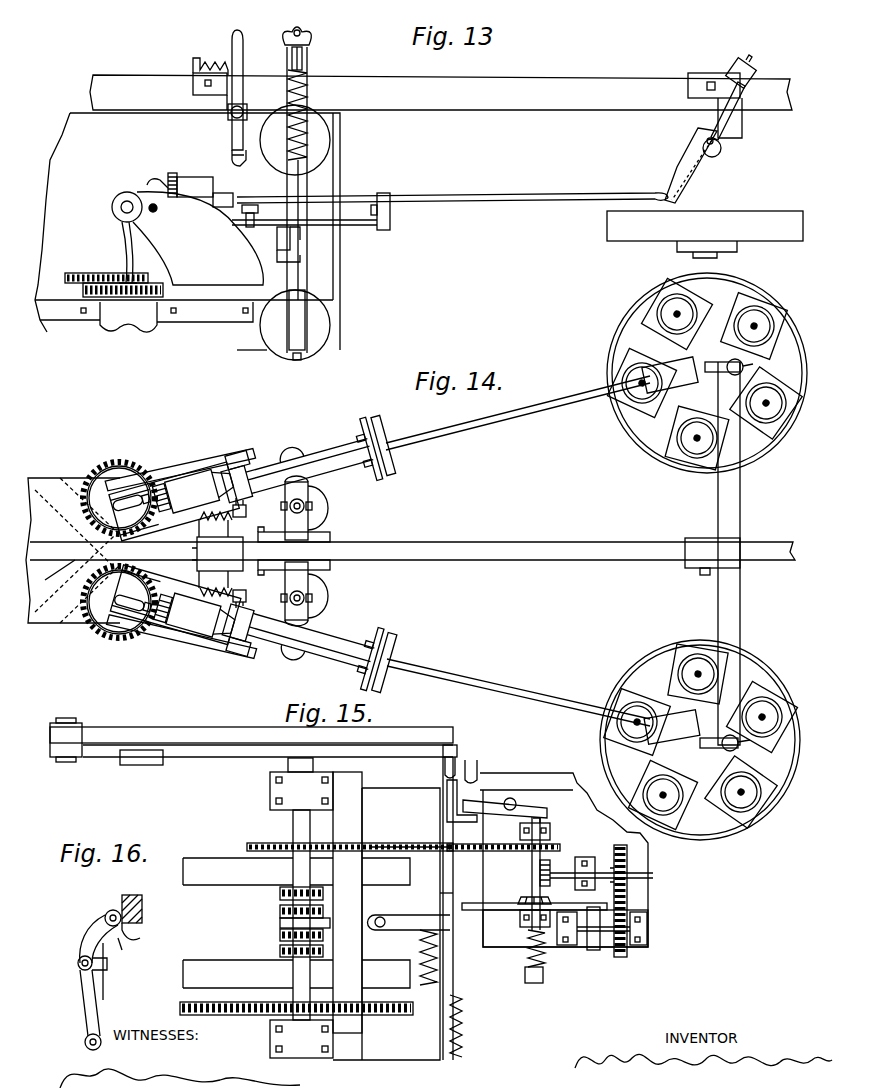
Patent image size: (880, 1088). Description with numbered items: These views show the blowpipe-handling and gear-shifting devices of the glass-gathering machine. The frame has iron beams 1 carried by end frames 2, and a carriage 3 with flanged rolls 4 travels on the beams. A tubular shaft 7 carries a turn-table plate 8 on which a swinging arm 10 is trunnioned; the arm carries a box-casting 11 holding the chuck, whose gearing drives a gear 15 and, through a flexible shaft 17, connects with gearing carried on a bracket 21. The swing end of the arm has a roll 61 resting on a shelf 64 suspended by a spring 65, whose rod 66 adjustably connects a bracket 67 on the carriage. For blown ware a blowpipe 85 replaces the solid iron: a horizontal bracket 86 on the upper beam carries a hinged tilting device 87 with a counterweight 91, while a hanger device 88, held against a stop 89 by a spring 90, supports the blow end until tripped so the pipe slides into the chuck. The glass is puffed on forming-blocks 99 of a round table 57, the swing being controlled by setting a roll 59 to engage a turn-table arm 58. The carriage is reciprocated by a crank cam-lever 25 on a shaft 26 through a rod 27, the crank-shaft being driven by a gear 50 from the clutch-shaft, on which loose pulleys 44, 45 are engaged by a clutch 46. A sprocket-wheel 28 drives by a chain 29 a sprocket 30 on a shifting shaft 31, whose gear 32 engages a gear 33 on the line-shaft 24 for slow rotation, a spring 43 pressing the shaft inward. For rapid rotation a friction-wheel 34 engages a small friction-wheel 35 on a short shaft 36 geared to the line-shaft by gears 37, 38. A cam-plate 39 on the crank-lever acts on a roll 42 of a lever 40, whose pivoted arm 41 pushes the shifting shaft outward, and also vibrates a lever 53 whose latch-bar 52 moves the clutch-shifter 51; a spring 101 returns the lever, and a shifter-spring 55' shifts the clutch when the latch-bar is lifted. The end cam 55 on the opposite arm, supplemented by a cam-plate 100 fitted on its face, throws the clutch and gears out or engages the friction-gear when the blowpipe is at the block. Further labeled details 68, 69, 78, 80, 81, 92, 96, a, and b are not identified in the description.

In FIG. 13, the iron beams 1 is at (441, 92).
In FIG. 14, the iron beams 1 is at (523, 549).
In FIG. 15, the end frame 2 is at (294, 917).
In FIG. 13, the carriage 3 is at (187, 231).
In FIG. 13, the flanged rolls 4 is at (318, 318).
In FIG. 14, the flanged rolls 4 is at (331, 538).
In FIG. 13, the tubular shaft 7 is at (198, 238).
In FIG. 14, the turn-table plate 8 is at (117, 462).
In FIG. 13, the arm 10 is at (352, 226).
In FIG. 14, the arm 10 is at (328, 446).
In FIG. 13, the box-casting 11 is at (205, 192).
In FIG. 14, the box-casting 11 is at (187, 553).
In FIG. 13, the gear 15 is at (177, 178).
In FIG. 14, the gear 15 is at (168, 478).
In FIG. 13, the flexible shaft 17 is at (148, 186).
In FIG. 14, the flexible shaft 17 is at (140, 492).
In FIG. 13, the bracket 21 is at (184, 325).
In FIG. 15, the line-shaft 24 is at (652, 879).
In FIG. 15, the crank cam-lever 25 is at (236, 754).
In FIG. 16, the crank cam-lever 25 is at (135, 895).
In FIG. 15, the shaft 26 is at (293, 870).
In FIG. 15, the rod 27 is at (251, 737).
In FIG. 15, the sprocket-wheel 28 is at (265, 843).
In FIG. 15, the chain 29 is at (380, 843).
In FIG. 15, the sprocket 30 is at (558, 845).
In FIG. 15, the shifting shaft 31 is at (545, 825).
In FIG. 15, the gear 32 is at (527, 897).
In FIG. 15, the gear 33 is at (557, 870).
In FIG. 15, the friction-wheel 34 is at (470, 903).
In FIG. 15, the small friction-wheel 35 is at (599, 939).
In FIG. 15, the short shaft 36 is at (628, 884).
In FIG. 15, the gear 37 is at (628, 951).
In FIG. 15, the gear 38 is at (616, 845).
In FIG. 15, the cam-formed plate 39 is at (145, 762).
In FIG. 15, the lever 40 is at (470, 817).
In FIG. 16, the lever 40 is at (84, 1005).
In FIG. 15, the pivoted arm 41 is at (530, 806).
In FIG. 15, the roll 42 is at (490, 775).
In FIG. 16, the roll 42 is at (106, 913).
In FIG. 13, the spring 43 is at (250, 205).
In FIG. 14, the spring 43 is at (250, 462).
In FIG. 15, the spring 43 is at (546, 962).
In FIG. 15, the pulley 44 is at (296, 871).
In FIG. 15, the pulley 45 is at (296, 974).
In FIG. 15, the clutch 46 is at (280, 914).
In FIG. 15, the gear 50 is at (255, 1016).
In FIG. 15, the clutch-shifter 51 is at (383, 917).
In FIG. 15, the latch-bar 52 is at (440, 890).
In FIG. 15, the lever 53 is at (445, 795).
In FIG. 15, the end cam 55 is at (465, 730).
In FIG. 16, the end cam 55 is at (147, 931).
In FIG. 15, the shifter-spring 55' is at (409, 957).
In FIG. 14, the round table 57 is at (703, 556).
In FIG. 14, the turn-table arm 58 is at (77, 523).
In FIG. 14, the roll 59 is at (50, 472).
In FIG. 13, the roll 61 is at (301, 257).
In FIG. 13, the shelf 64 is at (307, 183).
In FIG. 13, the spring 65 is at (308, 95).
In FIG. 13, the rod 66 is at (303, 55).
In FIG. 13, the bracket 67 is at (311, 39).
In FIG. 14, the bracket 67 is at (310, 513).
In FIG. 13, the foot 68 is at (302, 356).
In FIG. 13, the column 69 is at (300, 332).
In FIG. 13, the rack 78 is at (83, 292).
In FIG. 14, the rack 78 is at (84, 498).
In FIG. 14, the dashed member 80 is at (80, 600).
In FIG. 13, the rack 81 is at (75, 273).
In FIG. 14, the rack 81 is at (59, 576).
In FIG. 13, the blowpipe 85 is at (506, 197).
In FIG. 14, the blowpipe 85 is at (545, 412).
In FIG. 13, the horizontal bracket 86 is at (743, 128).
In FIG. 14, the horizontal bracket 86 is at (730, 615).
In FIG. 13, the tilting device 87 is at (687, 178).
In FIG. 14, the tilting device 87 is at (671, 550).
In FIG. 13, the hanger device 88 is at (231, 136).
In FIG. 14, the hanger device 88 is at (247, 513).
In FIG. 13, the stop 89 is at (243, 65).
In FIG. 13, the spring 90 is at (210, 73).
In FIG. 14, the spring 90 is at (217, 554).
In FIG. 13, the counterweight 91 is at (758, 72).
In FIG. 14, the counterweight 91 is at (726, 555).
In FIG. 13, the roller 92 is at (721, 151).
In FIG. 13, the pin 96 is at (158, 210).
In FIG. 14, the forming-blocks 99 is at (640, 340).
In FIG. 15, the cam-plate 100 is at (470, 772).
In FIG. 16, the cam-plate 100 is at (134, 950).
In FIG. 15, the spring 101 is at (465, 1020).
In FIG. 13, the flange a is at (391, 218).
In FIG. 14, the flange a is at (386, 417).
In FIG. 13, the pivot b is at (112, 208).